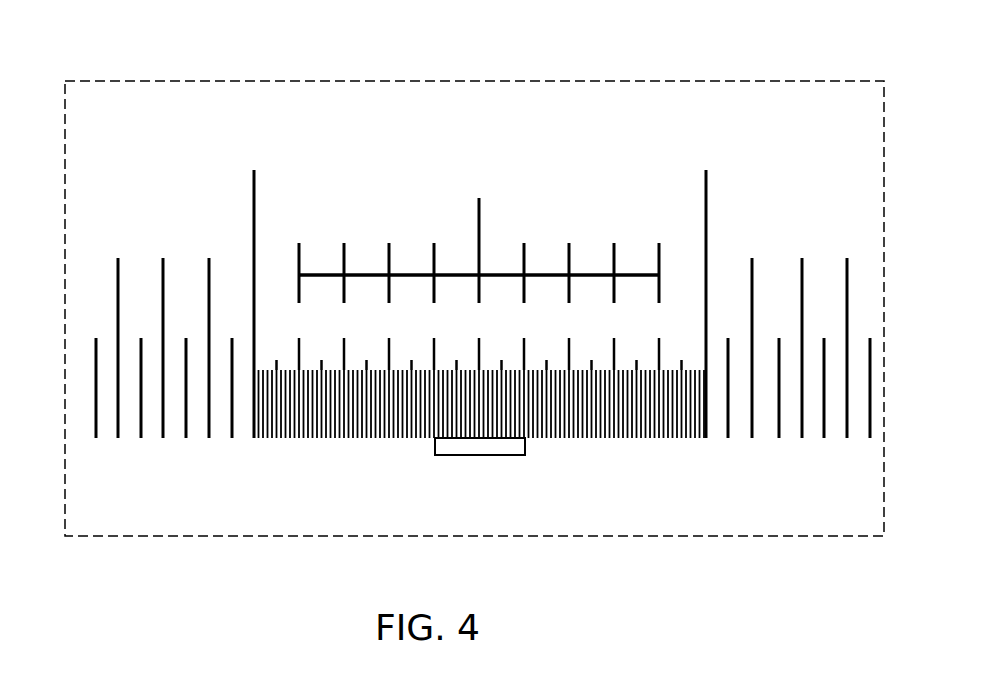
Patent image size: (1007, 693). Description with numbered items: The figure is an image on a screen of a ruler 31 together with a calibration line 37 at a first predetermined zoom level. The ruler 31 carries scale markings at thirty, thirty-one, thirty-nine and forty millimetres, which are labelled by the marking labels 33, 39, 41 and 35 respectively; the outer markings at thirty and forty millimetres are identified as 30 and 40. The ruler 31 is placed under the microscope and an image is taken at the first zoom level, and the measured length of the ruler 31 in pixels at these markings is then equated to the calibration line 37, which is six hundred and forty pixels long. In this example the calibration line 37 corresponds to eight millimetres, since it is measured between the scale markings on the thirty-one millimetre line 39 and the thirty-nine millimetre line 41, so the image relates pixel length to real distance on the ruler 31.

The 30 mm marking 30 is at (183, 276).
The 40 mm marking 40 is at (776, 276).
The 30 mm marking label 33 is at (254, 193).
The 40 mm marking label 35 is at (707, 185).
The calibration line 37 is at (456, 272).
The 31 mm line 39 is at (301, 262).
The 39 mm line 41 is at (659, 258).
The ruler 31 is at (706, 430).